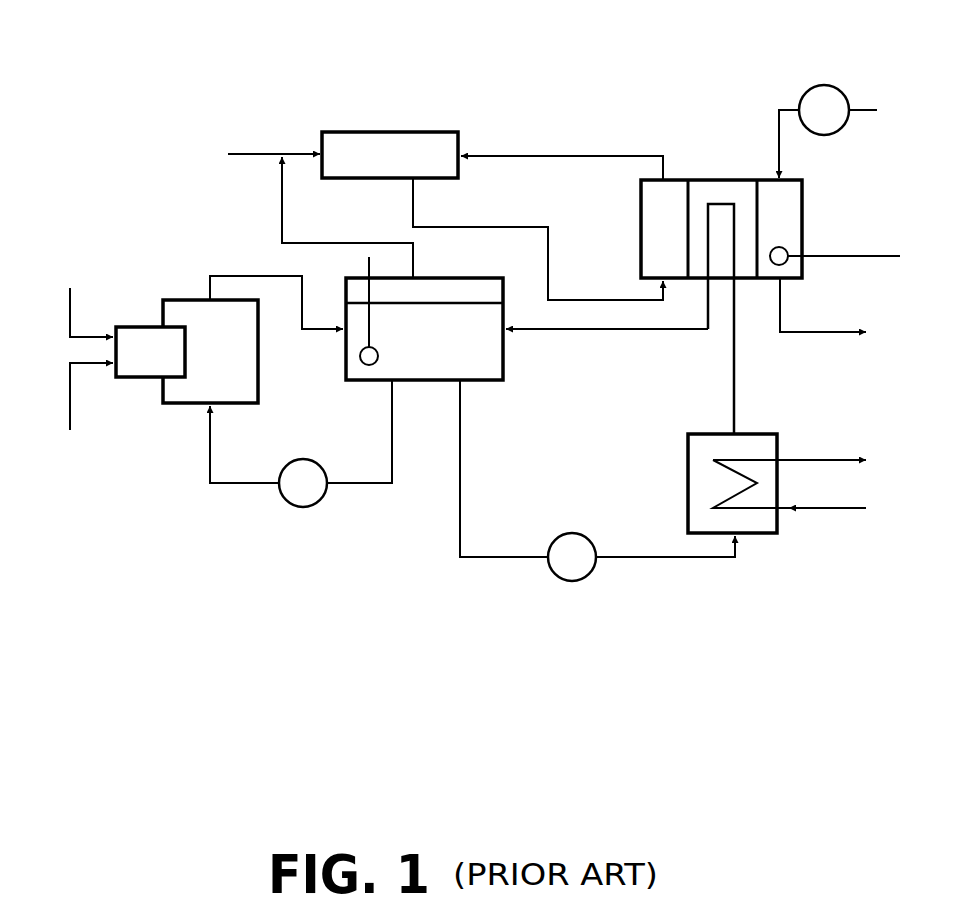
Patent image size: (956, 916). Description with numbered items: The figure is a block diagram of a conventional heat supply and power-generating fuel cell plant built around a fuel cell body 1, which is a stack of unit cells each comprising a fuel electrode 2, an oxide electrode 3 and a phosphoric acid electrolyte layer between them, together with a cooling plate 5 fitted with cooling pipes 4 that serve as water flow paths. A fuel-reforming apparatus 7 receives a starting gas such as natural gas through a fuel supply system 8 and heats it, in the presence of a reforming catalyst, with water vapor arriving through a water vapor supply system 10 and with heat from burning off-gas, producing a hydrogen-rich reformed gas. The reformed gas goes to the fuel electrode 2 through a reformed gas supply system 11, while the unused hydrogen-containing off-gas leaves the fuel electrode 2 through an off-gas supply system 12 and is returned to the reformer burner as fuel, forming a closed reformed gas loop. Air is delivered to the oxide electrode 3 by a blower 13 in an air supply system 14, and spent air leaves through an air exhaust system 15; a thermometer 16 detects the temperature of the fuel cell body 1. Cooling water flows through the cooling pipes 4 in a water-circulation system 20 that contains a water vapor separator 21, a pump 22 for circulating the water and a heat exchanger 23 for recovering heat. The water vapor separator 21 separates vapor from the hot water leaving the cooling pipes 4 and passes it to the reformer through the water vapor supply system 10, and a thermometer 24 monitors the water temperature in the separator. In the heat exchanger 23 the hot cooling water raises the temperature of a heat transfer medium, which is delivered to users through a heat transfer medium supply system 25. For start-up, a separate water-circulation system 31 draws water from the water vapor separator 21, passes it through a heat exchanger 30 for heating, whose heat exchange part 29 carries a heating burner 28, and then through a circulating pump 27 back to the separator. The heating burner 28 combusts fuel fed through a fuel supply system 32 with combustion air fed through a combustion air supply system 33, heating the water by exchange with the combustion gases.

The fuel cell body 1 is at (700, 168).
The fuel electrode 2 is at (648, 220).
The oxide electrode 3 is at (797, 213).
The cooling pipes 4 is at (735, 255).
The cooling plate 5 is at (742, 190).
The fuel-reforming apparatus 7 is at (382, 137).
The fuel supply system 8 is at (255, 152).
The water vapor supply system 10 is at (282, 200).
The reformed gas supply system 11 is at (483, 228).
The off-gas supply system 12 is at (545, 156).
The blower 13 is at (820, 85).
The air supply system 14 is at (860, 110).
The air exhaust system 15 is at (818, 335).
The thermometer 16 is at (832, 258).
The water-circulation system 20 is at (457, 538).
The water vapor separator 21 is at (497, 355).
The pump 22 is at (588, 578).
The heat exchanger for recovering heat 23 is at (767, 528).
The thermometer 24 is at (369, 262).
The heat transfer medium supply system 25 is at (840, 510).
The circulating pump for starting 27 is at (290, 505).
The heating burner 28 is at (133, 333).
The heat exchange part 29 is at (180, 305).
The heat exchanger for heating 30 is at (182, 412).
The water-circulation system for starting 31 is at (380, 485).
The fuel supply system 32 is at (70, 398).
The combustion air supply system 33 is at (68, 312).